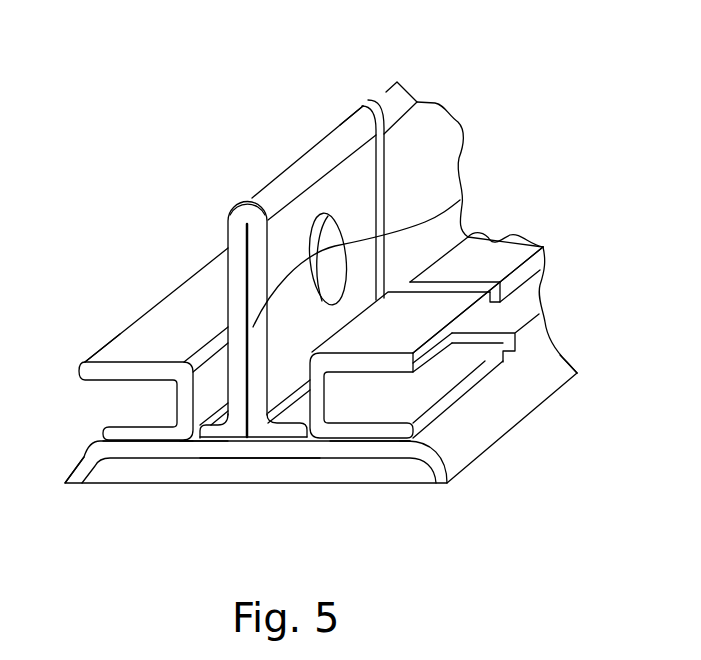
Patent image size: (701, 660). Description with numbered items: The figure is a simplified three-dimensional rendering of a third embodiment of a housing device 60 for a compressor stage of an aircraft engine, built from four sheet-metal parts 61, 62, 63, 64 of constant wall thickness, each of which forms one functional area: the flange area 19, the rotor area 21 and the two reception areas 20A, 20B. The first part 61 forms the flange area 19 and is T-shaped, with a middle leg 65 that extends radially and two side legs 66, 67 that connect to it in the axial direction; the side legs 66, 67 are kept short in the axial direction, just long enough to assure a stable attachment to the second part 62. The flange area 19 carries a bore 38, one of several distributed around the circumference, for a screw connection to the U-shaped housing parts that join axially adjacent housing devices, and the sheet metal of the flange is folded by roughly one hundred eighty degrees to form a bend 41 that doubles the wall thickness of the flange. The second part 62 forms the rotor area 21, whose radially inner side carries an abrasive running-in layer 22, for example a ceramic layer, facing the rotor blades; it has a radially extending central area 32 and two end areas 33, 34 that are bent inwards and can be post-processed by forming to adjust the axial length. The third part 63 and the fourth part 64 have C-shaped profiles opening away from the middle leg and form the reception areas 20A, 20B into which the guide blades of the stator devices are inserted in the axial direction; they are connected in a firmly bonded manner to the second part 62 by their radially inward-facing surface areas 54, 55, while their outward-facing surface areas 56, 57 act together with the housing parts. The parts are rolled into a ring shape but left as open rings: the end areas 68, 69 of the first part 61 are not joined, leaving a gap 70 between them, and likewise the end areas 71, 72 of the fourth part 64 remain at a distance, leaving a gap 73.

The flange area 19 is at (235, 246).
The reception area 20A is at (153, 323).
The reception area 20B is at (497, 252).
The rotor area 21 is at (203, 447).
The abrasive running-in layer 22 is at (258, 467).
The central area 32 is at (381, 440).
The end area 33 is at (82, 473).
The end area 34 is at (425, 470).
The bore 38 is at (332, 232).
The bend 41 is at (250, 200).
The surface area 54 is at (150, 436).
The surface area 55 is at (405, 445).
The surface area 56 is at (186, 298).
The surface area 57 is at (547, 238).
The housing device 60 is at (155, 184).
The first part 61 is at (314, 136).
The second part 62 is at (80, 449).
The third part 63 is at (102, 330).
The fourth part 64 is at (547, 240).
The middle leg 65 is at (477, 262).
The side leg 66 is at (227, 428).
The side leg 67 is at (291, 442).
The end area 68 is at (362, 107).
The end area 69 is at (391, 112).
The gap 70 is at (370, 98).
The end area 71 is at (577, 375).
The end area 72 is at (496, 278).
The gap 73 is at (512, 298).